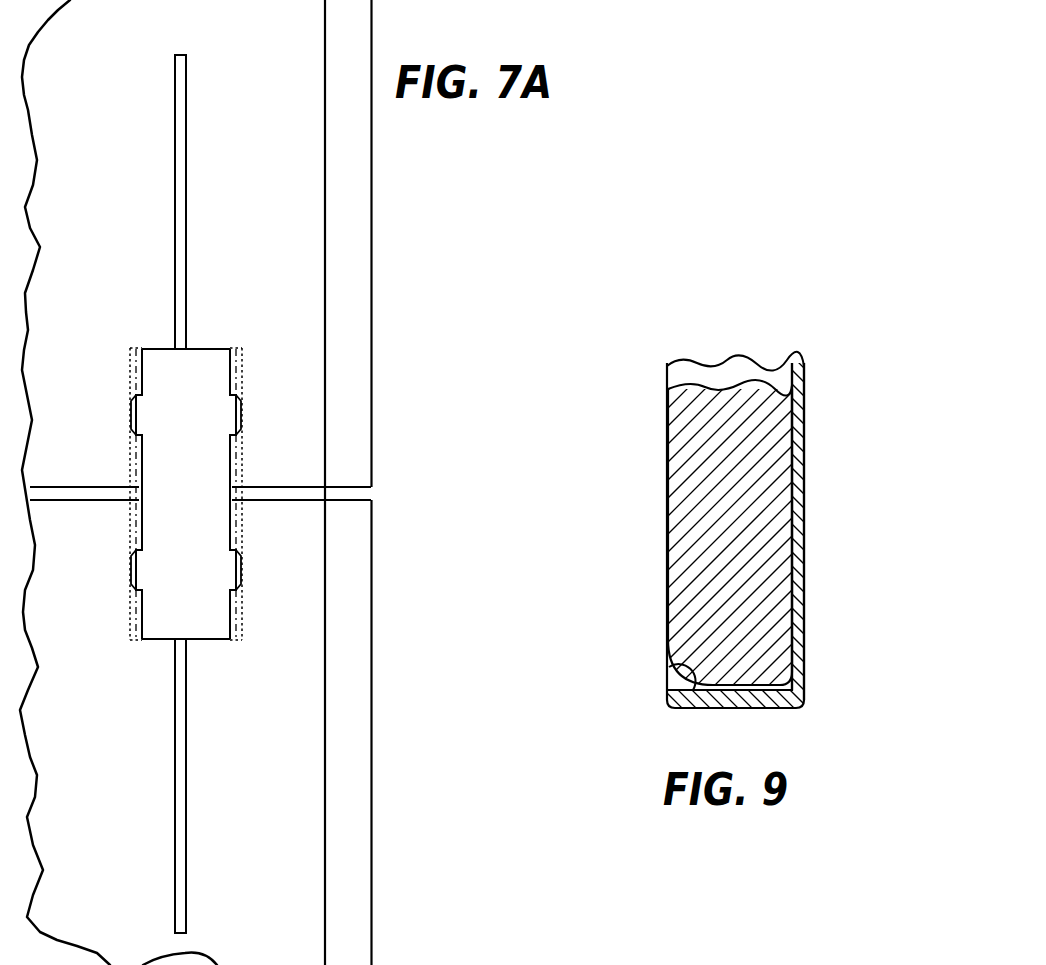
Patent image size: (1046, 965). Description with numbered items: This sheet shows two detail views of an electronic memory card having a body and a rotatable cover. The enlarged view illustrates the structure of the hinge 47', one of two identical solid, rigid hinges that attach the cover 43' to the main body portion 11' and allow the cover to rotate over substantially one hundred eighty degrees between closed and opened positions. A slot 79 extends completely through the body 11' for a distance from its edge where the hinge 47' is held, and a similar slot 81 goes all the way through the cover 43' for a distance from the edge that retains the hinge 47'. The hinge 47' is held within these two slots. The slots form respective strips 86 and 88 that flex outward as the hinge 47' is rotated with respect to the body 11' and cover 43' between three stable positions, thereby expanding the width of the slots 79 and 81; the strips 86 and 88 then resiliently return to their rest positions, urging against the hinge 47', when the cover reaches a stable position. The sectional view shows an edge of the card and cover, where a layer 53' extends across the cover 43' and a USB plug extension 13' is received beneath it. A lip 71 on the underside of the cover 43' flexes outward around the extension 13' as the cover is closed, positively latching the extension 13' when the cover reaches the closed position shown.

In FIG. 7A, the slot 79 is at (179, 258).
In FIG. 7A, the strip 86 is at (313, 291).
In FIG. 7A, the main body portion 11' is at (424, 243).
In FIG. 7A, the hinge 47' is at (290, 494).
In FIG. 7A, the strip 88 is at (308, 538).
In FIG. 7A, the cover 43' is at (424, 732).
In FIG. 9, the cover 43' is at (683, 548).
In FIG. 7A, the slot 81 is at (179, 697).
In FIG. 9, the layer 53' is at (842, 531).
In FIG. 9, the USB plug extension 13' is at (693, 540).
In FIG. 9, the lip 71 is at (672, 676).